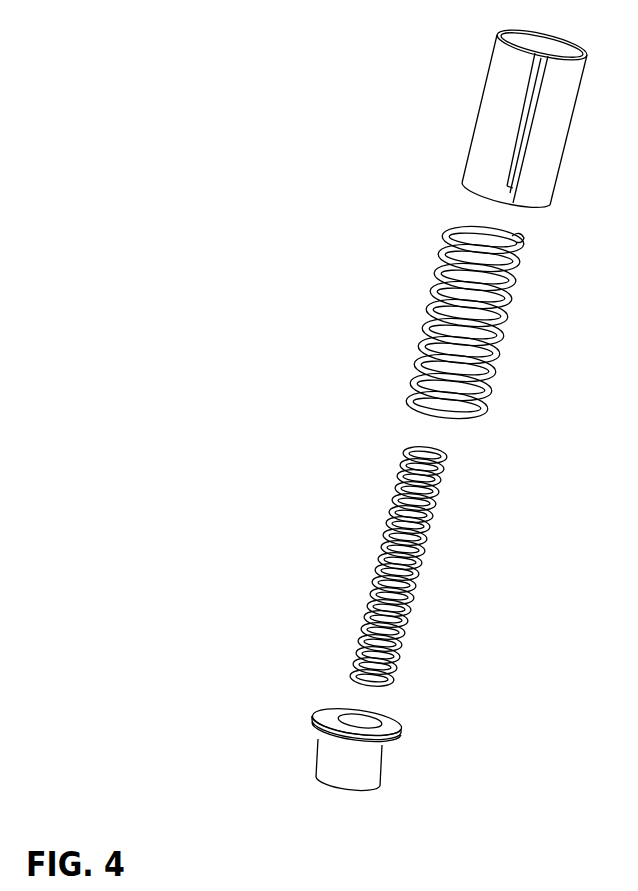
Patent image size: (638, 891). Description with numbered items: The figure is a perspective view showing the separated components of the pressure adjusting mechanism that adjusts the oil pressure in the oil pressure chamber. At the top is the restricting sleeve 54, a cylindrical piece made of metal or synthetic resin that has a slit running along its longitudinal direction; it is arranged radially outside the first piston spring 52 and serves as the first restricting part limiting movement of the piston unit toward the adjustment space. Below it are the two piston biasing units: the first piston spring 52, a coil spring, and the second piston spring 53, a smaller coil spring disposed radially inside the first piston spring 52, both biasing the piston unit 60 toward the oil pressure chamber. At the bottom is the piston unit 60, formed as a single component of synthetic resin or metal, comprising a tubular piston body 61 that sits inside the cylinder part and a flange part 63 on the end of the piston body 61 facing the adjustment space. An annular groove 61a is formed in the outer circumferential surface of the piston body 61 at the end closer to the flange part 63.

The restricting sleeve 54 is at (503, 123).
The first piston spring 52 is at (440, 273).
The second piston spring 53 is at (395, 472).
The piston unit 60 is at (352, 759).
The flange part 63 is at (394, 735).
The annular groove 61a is at (389, 749).
The piston body 61 is at (370, 777).